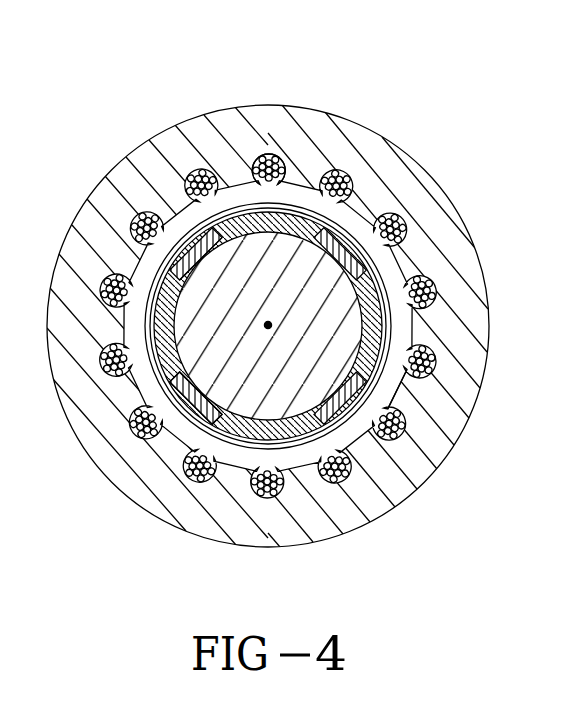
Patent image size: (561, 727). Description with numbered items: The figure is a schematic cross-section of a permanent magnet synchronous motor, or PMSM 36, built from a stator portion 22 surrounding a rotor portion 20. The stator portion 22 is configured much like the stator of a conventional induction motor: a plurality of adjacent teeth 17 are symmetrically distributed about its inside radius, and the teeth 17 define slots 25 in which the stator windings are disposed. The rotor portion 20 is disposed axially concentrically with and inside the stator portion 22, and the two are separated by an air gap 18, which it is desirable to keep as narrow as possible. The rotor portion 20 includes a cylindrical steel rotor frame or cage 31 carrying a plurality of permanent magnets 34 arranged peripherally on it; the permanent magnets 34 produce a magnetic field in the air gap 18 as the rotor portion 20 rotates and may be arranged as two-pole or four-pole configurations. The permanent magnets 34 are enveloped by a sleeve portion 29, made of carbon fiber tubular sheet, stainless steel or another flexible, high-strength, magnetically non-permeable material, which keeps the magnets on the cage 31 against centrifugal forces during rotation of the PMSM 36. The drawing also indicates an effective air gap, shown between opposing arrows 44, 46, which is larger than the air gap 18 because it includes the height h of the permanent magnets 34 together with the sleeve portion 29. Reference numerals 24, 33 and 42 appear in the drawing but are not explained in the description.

The teeth 17 is at (272, 194).
The air gap 18 is at (388, 268).
The rotor portion 20 is at (288, 438).
The stator portion 22 is at (420, 163).
The winding 24 is at (141, 414).
The slots 25 is at (114, 273).
The sleeve portion 29 is at (198, 420).
The rotor cage 31 is at (178, 300).
The axis 33 is at (264, 330).
The permanent magnets 34 is at (166, 341).
The PMSM 36 is at (52, 146).
The permanent magnet 42 is at (349, 214).
The opposing arrow 44 is at (340, 356).
The opposing arrow 46 is at (410, 393).
The height of permanent magnets h is at (212, 412).